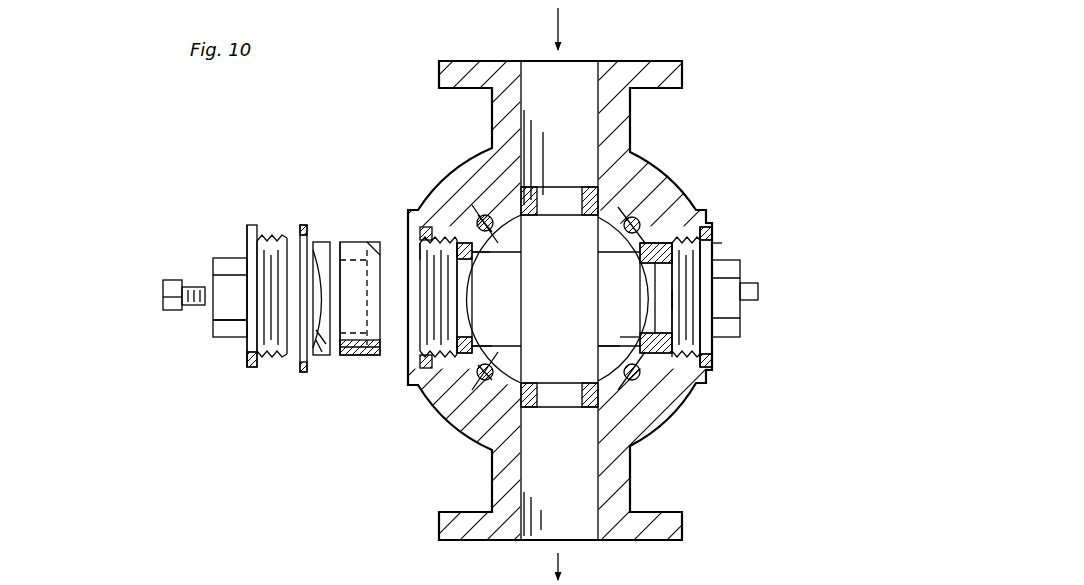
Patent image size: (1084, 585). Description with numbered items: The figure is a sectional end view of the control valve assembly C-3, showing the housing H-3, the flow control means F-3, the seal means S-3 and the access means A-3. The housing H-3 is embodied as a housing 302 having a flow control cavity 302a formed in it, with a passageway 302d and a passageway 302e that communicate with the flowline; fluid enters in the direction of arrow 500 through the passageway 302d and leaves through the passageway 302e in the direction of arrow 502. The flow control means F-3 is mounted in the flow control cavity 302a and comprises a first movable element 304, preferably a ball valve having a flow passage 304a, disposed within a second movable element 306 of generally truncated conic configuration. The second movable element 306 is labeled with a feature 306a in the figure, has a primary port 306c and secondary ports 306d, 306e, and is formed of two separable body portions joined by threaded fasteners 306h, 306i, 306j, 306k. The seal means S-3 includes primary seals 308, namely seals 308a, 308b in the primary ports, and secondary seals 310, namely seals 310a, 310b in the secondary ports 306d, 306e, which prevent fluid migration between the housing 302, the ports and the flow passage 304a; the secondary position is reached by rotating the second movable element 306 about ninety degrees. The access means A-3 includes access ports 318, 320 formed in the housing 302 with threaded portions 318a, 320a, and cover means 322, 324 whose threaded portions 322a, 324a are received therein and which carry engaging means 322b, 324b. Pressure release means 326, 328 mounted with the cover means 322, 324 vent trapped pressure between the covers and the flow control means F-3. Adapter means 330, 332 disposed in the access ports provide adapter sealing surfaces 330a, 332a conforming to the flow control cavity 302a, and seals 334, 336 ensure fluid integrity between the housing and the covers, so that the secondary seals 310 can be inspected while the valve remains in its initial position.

The housing 302 is at (690, 56).
The flow control cavity 302a is at (668, 234).
The passageway 302d is at (583, 94).
The passageway 302e is at (583, 472).
The first movable element 304 is at (660, 318).
The flow passage 304a is at (585, 276).
The second movable element 306 is at (470, 388).
The seat portion 306a is at (496, 374).
The primary port 306c is at (606, 386).
The secondary port 306d is at (476, 253).
The secondary port 306e is at (723, 250).
The threaded fastener 306h is at (652, 222).
The threaded fastener 306i is at (668, 352).
The threaded fastener 306j is at (478, 196).
The threaded fastener 306k is at (466, 383).
The primary seals 308 is at (512, 190).
The seal 308a is at (499, 183).
The seal 308b is at (482, 440).
The secondary seals 310 is at (343, 358).
The seal 310a is at (344, 242).
The seal 310b is at (630, 342).
The access port 318 is at (437, 234).
The threaded portion 318a is at (395, 356).
The access port 320 is at (692, 350).
The threaded portion 320a is at (690, 365).
The cover means 322 is at (212, 258).
The threaded portion 322a is at (250, 368).
The engaging means 322b is at (213, 325).
The cover means 324 is at (718, 258).
The threaded portion 324a is at (700, 226).
The engaging means 324b is at (742, 272).
The pressure release means 326 is at (166, 278).
The pressure release means 328 is at (762, 291).
The adapter means 330 is at (322, 234).
The adapter sealing surface 330a is at (337, 242).
The adapter means 332 is at (680, 236).
The adapter sealing surface 332a is at (676, 301).
The seal 334 is at (308, 225).
The seal 336 is at (702, 378).
The arrow 500 is at (558, 25).
The arrow 502 is at (558, 568).
The access means A-3 is at (257, 224).
The control valve assembly C-3 is at (777, 93).
The flow control means F-3 is at (637, 198).
The housing H-3 is at (653, 149).
The seal means S-3 is at (372, 235).